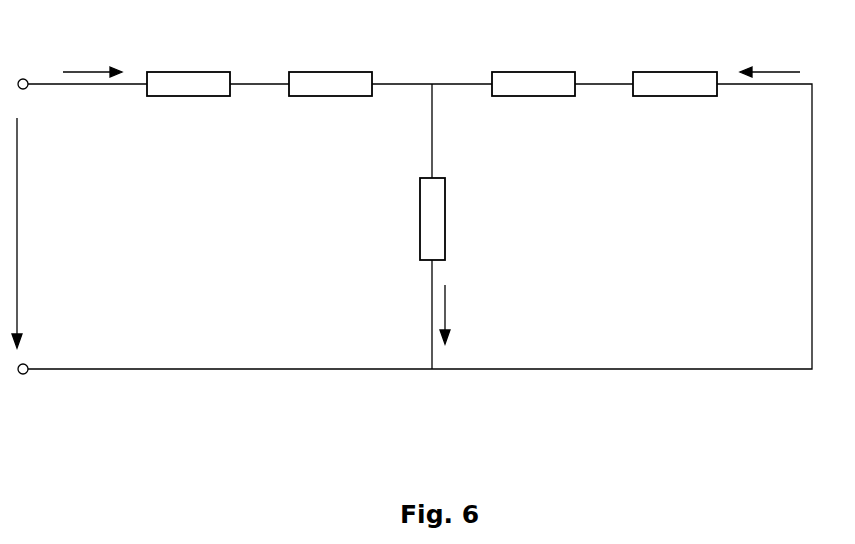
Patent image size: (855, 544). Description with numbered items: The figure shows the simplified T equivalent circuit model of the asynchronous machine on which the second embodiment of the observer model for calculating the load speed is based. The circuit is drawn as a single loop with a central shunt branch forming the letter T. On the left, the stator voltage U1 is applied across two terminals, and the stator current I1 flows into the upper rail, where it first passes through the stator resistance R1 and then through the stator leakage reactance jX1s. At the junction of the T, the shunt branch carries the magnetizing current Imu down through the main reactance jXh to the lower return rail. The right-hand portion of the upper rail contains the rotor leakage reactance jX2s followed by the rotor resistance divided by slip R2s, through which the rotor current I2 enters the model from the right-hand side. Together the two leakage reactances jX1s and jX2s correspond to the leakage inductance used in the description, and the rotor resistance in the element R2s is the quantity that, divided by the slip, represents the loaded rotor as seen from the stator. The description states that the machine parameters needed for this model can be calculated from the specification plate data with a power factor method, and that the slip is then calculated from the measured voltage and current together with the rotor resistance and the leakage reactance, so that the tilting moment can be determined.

The stator resistance R1 is at (188, 70).
The stator leakage reactance jX1s is at (330, 68).
The rotor leakage reactance jX2s is at (533, 68).
The rotor resistance divided by slip R2s is at (675, 68).
The main reactance jXh is at (409, 219).
The stator current I1 is at (92, 60).
The rotor current I2 is at (770, 59).
The stator voltage U1 is at (39, 233).
The magnetizing current Imu is at (456, 314).